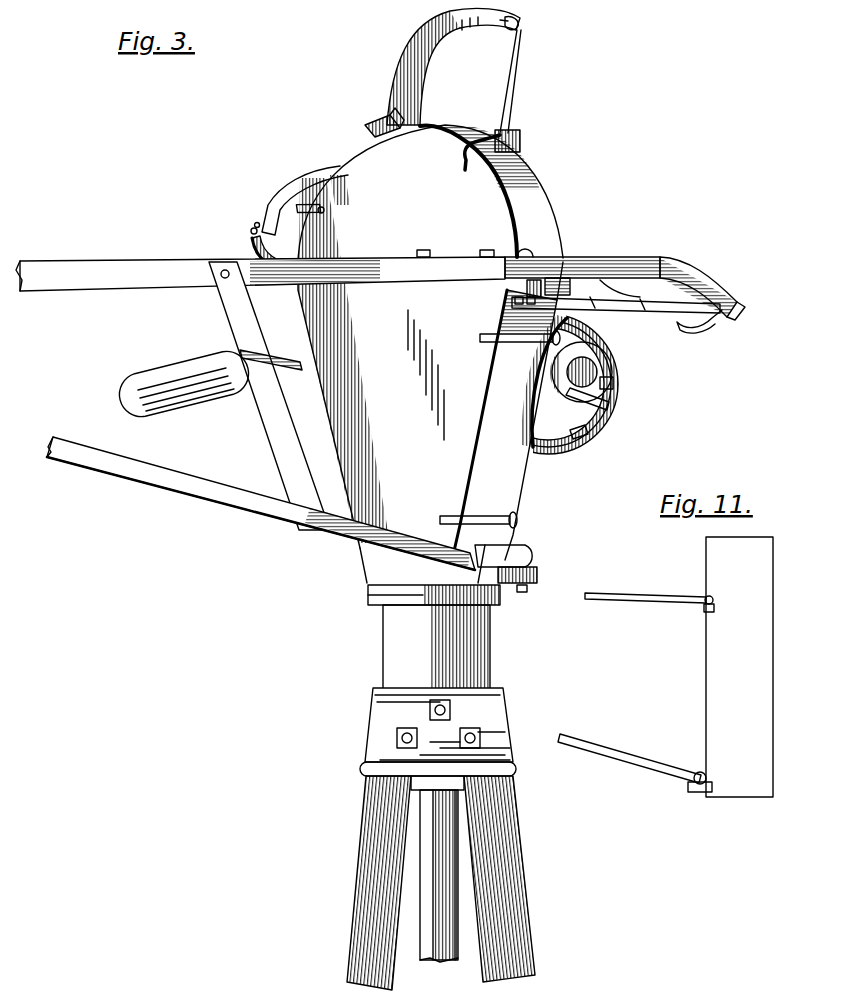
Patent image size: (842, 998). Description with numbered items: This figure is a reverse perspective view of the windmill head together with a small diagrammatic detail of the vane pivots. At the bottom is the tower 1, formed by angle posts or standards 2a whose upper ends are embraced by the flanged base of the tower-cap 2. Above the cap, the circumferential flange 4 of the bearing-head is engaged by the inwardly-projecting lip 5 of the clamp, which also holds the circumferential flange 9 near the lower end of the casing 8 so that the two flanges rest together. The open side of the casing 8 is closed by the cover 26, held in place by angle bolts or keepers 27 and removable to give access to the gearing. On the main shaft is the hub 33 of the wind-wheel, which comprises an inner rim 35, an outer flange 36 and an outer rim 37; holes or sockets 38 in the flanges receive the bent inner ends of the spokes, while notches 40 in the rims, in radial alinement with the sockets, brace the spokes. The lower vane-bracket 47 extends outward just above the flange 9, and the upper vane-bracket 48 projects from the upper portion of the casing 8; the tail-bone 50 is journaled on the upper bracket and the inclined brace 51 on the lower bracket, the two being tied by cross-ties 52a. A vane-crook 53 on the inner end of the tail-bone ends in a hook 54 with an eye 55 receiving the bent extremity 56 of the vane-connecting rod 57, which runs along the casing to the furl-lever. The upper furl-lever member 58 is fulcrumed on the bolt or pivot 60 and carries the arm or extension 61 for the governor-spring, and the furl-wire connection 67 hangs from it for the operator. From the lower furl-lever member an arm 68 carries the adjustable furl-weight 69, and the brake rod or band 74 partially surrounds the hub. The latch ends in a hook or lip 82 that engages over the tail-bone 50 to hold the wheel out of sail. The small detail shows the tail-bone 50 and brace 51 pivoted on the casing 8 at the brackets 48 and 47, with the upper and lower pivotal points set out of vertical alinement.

In FIG. 3, the tower 1 is at (439, 892).
In FIG. 3, the tower-cap 2 is at (490, 715).
In FIG. 3, the angle posts or standards 2a is at (525, 849).
In FIG. 3, the circumferential flange 4 is at (372, 602).
In FIG. 3, the inwardly-projecting lip 5 is at (478, 650).
In FIG. 11, the casing 8 is at (751, 667).
In FIG. 3, the circumferential flange 9 is at (528, 591).
In FIG. 3, the cover 26 is at (430, 354).
In FIG. 3, the angle bolts or keepers 27 is at (482, 160).
In FIG. 3, the hub 33 is at (590, 374).
In FIG. 3, the inner rim 35 is at (541, 447).
In FIG. 3, the outer flange 36 is at (594, 351).
In FIG. 3, the outer rim 37 is at (590, 432).
In FIG. 3, the holes or sockets 38 is at (610, 405).
In FIG. 3, the notches 40 is at (614, 384).
In FIG. 3, the lower vane-bracket 47 is at (530, 570).
In FIG. 11, the lower vane-bracket 47 is at (692, 795).
In FIG. 3, the upper vane-bracket 48 is at (525, 289).
In FIG. 11, the upper vane-bracket 48 is at (714, 610).
In FIG. 3, the tail-bone 50 is at (165, 288).
In FIG. 11, the tail-bone 50 is at (652, 604).
In FIG. 3, the inclined brace 51 is at (210, 498).
In FIG. 11, the inclined brace 51 is at (628, 758).
In FIG. 3, the cross-ties 52a is at (278, 443).
In FIG. 3, the vane-crook 53 is at (615, 260).
In FIG. 3, the hook 54 is at (705, 267).
In FIG. 3, the eye 55 is at (740, 303).
In FIG. 3, the bent extremity 56 is at (703, 328).
In FIG. 3, the vane-connecting rod 57 is at (616, 311).
In FIG. 3, the upper furl-lever member 58 is at (440, 33).
In FIG. 3, the bolt or pivot 60 is at (370, 118).
In FIG. 3, the arm or extension 61 is at (305, 170).
In FIG. 3, the furl-wire connection 67 is at (520, 101).
In FIG. 3, the arm 68 is at (282, 347).
In FIG. 3, the furl-weight 69 is at (170, 373).
In FIG. 3, the brake rod or band 74 is at (545, 432).
In FIG. 3, the hook or lip 82 is at (258, 242).